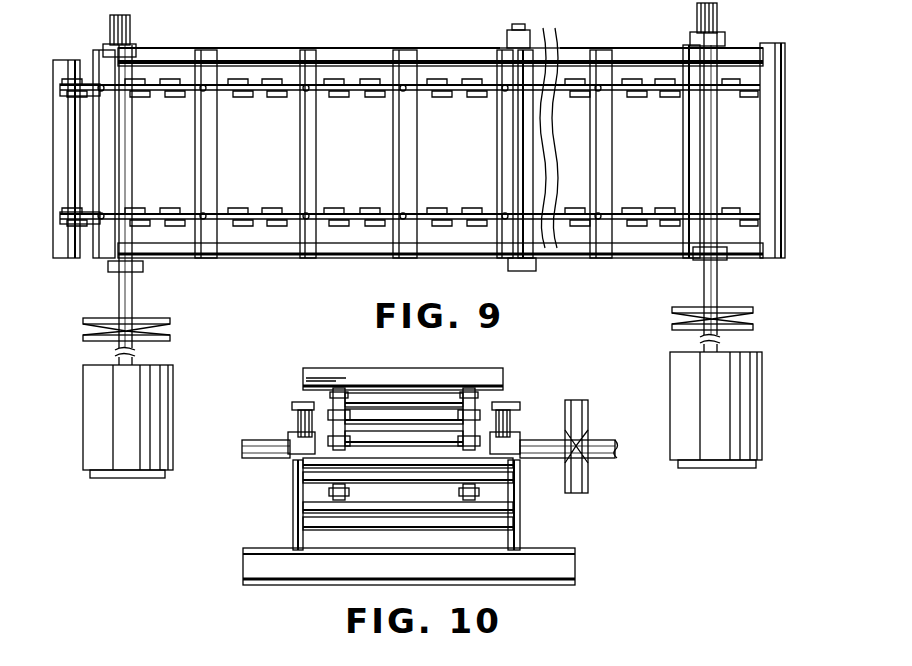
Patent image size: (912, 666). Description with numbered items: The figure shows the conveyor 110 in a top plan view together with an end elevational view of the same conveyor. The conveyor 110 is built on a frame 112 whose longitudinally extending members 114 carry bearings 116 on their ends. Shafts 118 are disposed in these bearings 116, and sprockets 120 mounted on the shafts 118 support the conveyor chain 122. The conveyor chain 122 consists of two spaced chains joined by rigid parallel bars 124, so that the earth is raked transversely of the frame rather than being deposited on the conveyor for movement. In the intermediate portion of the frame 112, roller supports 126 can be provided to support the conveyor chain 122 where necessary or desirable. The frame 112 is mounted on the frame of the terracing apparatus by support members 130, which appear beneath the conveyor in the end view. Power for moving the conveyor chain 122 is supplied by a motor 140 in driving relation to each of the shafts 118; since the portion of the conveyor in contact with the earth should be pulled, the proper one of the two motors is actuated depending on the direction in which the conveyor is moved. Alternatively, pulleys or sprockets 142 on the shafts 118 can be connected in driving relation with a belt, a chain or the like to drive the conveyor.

In FIG. 9, the conveyor 110 is at (433, 47).
In FIG. 10, the conveyor 110 is at (507, 366).
In FIG. 9, the frame 112 is at (598, 45).
In FIG. 9, the longitudinally extending members 114 is at (341, 47).
In FIG. 9, the bearings 116 is at (133, 48).
In FIG. 10, the bearings 116 is at (300, 450).
In FIG. 9, the shafts 118 is at (128, 170).
In FIG. 10, the shafts 118 is at (270, 445).
In FIG. 9, the sprockets 120 is at (88, 82).
In FIG. 10, the sprockets 120 is at (312, 402).
In FIG. 9, the conveyor chain 122 is at (256, 82).
In FIG. 10, the conveyor chain 122 is at (338, 388).
In FIG. 9, the rigid parallel bars 124 is at (405, 151).
In FIG. 10, the rigid parallel bars 124 is at (390, 383).
In FIG. 9, the roller supports 126 is at (545, 30).
In FIG. 10, the support members 130 is at (297, 507).
In FIG. 9, the motor 140 is at (160, 400).
In FIG. 9, the pulleys or sprockets 142 is at (170, 328).
In FIG. 10, the pulleys or sprockets 142 is at (580, 403).